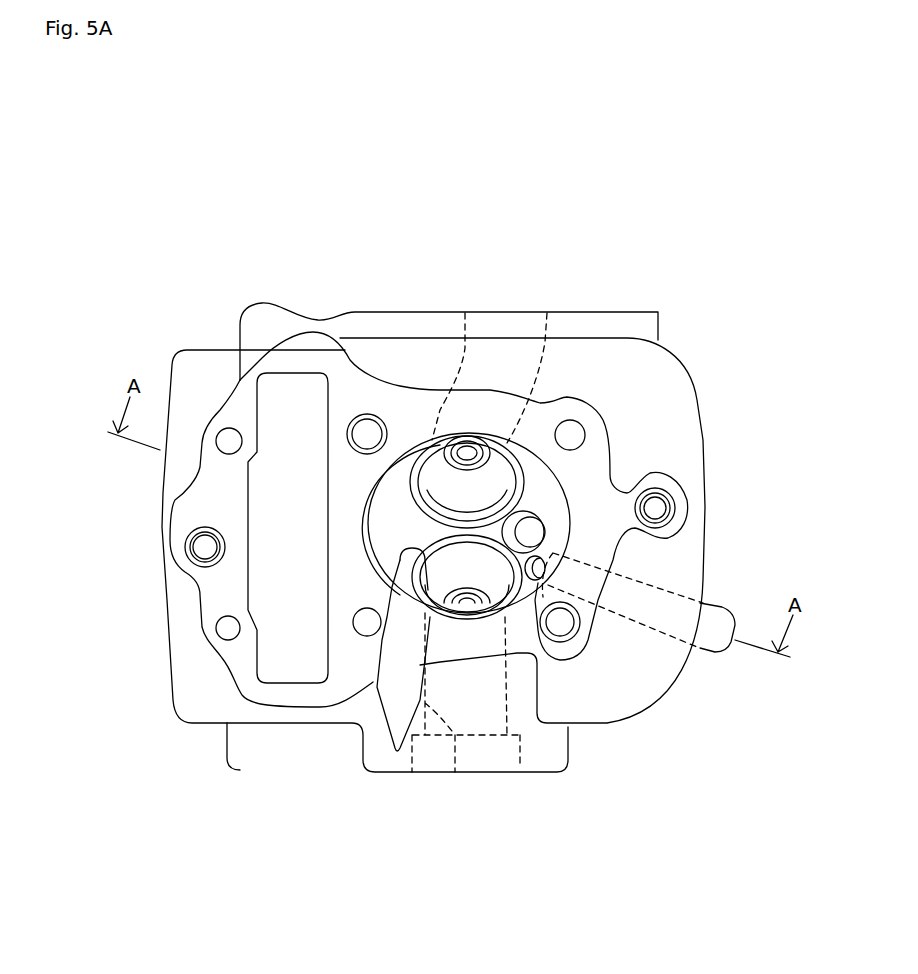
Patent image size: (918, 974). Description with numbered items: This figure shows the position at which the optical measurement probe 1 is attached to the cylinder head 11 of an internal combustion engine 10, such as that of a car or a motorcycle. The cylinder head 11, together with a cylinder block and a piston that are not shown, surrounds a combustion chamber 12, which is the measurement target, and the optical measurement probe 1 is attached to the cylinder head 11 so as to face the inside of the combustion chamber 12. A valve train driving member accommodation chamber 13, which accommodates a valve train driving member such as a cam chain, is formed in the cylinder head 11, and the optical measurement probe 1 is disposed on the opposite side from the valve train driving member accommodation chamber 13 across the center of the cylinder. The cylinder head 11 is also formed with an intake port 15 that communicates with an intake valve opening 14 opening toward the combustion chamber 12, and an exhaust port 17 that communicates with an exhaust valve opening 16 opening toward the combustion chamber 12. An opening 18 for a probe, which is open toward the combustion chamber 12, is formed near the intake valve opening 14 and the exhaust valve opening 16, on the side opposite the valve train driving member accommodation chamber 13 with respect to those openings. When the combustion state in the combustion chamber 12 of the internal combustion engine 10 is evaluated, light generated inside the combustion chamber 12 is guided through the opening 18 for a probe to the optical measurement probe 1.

The optical measurement probe 1 is at (708, 645).
The internal combustion engine 10 is at (631, 251).
The cylinder head 11 is at (402, 390).
The combustion chamber 12 is at (392, 525).
The valve train driving member accommodation chamber 13 is at (258, 511).
The intake valve opening 14 is at (508, 491).
The intake port 15 is at (485, 338).
The exhaust valve opening 16 is at (375, 690).
The exhaust port 17 is at (457, 775).
The opening for a probe 18 is at (535, 597).